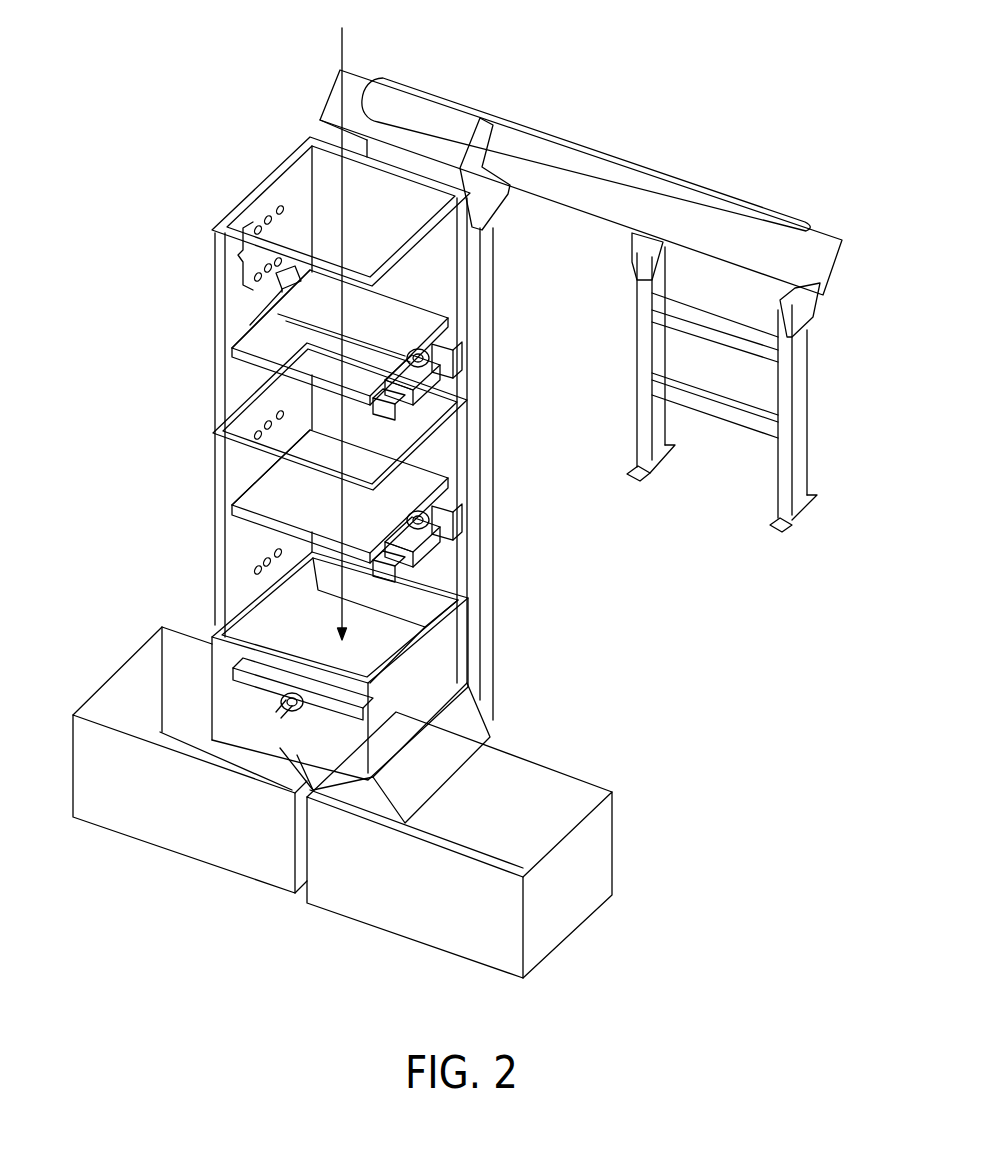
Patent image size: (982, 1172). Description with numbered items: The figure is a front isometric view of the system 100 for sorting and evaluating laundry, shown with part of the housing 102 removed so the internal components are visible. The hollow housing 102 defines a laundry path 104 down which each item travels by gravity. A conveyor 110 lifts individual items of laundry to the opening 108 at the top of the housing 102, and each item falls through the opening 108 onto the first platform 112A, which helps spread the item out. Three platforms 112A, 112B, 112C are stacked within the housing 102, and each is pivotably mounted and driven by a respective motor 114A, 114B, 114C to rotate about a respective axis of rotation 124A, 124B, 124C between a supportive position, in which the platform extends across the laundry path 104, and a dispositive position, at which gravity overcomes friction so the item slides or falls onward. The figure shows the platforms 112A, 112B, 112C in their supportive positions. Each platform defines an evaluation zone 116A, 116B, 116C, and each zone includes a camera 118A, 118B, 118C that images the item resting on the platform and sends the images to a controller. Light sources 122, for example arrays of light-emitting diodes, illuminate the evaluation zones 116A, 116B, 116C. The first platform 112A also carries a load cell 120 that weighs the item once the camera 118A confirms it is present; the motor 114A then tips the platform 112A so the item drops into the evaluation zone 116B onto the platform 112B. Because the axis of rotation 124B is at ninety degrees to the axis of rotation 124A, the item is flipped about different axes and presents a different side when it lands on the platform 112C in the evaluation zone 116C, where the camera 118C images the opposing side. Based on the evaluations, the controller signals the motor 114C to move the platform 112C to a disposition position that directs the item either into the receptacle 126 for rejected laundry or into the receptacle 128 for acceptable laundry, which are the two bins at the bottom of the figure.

The system 100 is at (228, 108).
The housing 102 is at (250, 196).
The laundry path 104 is at (342, 48).
The opening 108 is at (277, 168).
The conveyor 110 is at (670, 172).
The first platform 112A is at (410, 322).
The second platform 112B is at (262, 503).
The third platform 112C is at (327, 658).
The motor 114A is at (428, 357).
The motor 114B is at (430, 518).
The motor 114C is at (283, 712).
The evaluation zone 116A is at (432, 262).
The evaluation zone 116B is at (443, 444).
The evaluation zone 116C is at (431, 589).
The camera 118A is at (293, 285).
The camera 118B is at (403, 408).
The camera 118C is at (405, 563).
The load cell 120 is at (420, 383).
The light sources 122 is at (242, 262).
The axis of rotation 124A is at (282, 318).
The axis of rotation 124B is at (310, 487).
The third gate 124C is at (280, 642).
The receptacle 126 is at (535, 792).
The receptacle 128 is at (172, 702).